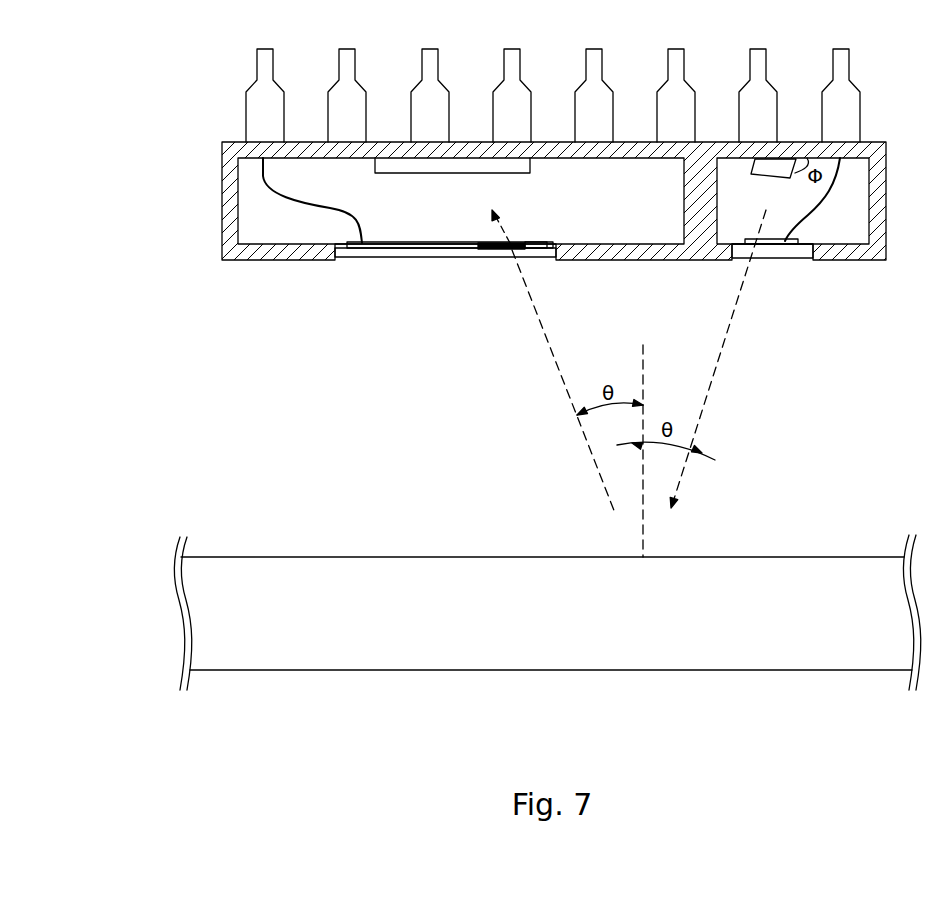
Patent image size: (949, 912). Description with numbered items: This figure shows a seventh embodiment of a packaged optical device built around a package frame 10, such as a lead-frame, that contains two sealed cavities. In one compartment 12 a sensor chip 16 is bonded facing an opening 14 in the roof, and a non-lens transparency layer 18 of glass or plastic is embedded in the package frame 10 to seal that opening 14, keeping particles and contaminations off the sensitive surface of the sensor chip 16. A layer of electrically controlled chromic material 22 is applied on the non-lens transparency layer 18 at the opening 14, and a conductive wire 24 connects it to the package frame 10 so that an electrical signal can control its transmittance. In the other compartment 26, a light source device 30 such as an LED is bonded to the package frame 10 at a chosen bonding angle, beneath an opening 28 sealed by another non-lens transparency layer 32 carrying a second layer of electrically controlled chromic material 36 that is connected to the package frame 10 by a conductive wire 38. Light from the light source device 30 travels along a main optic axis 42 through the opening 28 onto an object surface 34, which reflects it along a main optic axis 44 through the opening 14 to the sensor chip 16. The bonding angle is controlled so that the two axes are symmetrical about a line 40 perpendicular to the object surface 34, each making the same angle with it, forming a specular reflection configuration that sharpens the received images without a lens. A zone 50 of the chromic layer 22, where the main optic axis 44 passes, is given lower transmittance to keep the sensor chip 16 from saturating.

The package frame 10 is at (641, 261).
The compartment 12 is at (390, 228).
The opening 14 is at (460, 265).
The sensor chip 16 is at (455, 174).
The non-lens transparency layer 18 is at (418, 258).
The layer of electrically controlled chromic material 22 is at (536, 242).
The conductive wire 24 is at (297, 197).
The compartment 26 is at (848, 213).
The opening 28 is at (786, 249).
The light source device 30 is at (752, 165).
The non-lens transparency layer 32 is at (790, 259).
The object surface 34 is at (325, 556).
The layer of electrically controlled chromic material 36 is at (776, 238).
The conductive wire 38 is at (840, 161).
The line 40 is at (644, 368).
The main optic axis 42 is at (710, 394).
The main optic axis 44 is at (560, 376).
The zone 50 is at (510, 230).